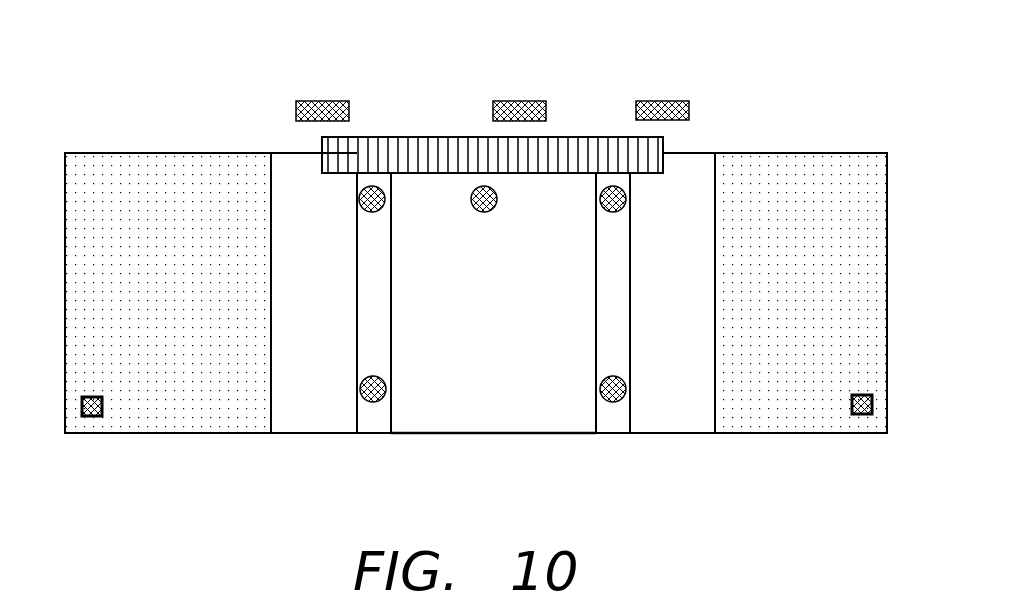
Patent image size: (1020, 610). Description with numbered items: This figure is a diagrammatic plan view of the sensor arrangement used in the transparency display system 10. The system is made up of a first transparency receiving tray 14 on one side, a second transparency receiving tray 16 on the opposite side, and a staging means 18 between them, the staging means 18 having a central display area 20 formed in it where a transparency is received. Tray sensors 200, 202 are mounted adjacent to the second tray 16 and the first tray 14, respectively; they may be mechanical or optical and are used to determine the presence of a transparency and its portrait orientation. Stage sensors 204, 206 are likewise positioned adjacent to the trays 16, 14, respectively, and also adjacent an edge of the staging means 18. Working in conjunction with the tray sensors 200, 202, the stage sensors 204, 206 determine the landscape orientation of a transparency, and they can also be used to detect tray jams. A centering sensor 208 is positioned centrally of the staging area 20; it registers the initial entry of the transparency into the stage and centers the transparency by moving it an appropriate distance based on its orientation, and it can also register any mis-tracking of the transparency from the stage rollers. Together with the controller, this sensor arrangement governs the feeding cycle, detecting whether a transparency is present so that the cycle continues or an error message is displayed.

The transparency display system 10 is at (479, 269).
The first transparency receiving tray 14 is at (733, 167).
The second transparency receiving tray 16 is at (173, 165).
The staging means 18 is at (512, 418).
The central display area 20 is at (443, 420).
The tray sensor 200 is at (377, 401).
The tray sensor 202 is at (613, 403).
The stage sensor 204 is at (372, 185).
The stage sensor 206 is at (613, 185).
The centering sensor 208 is at (483, 212).